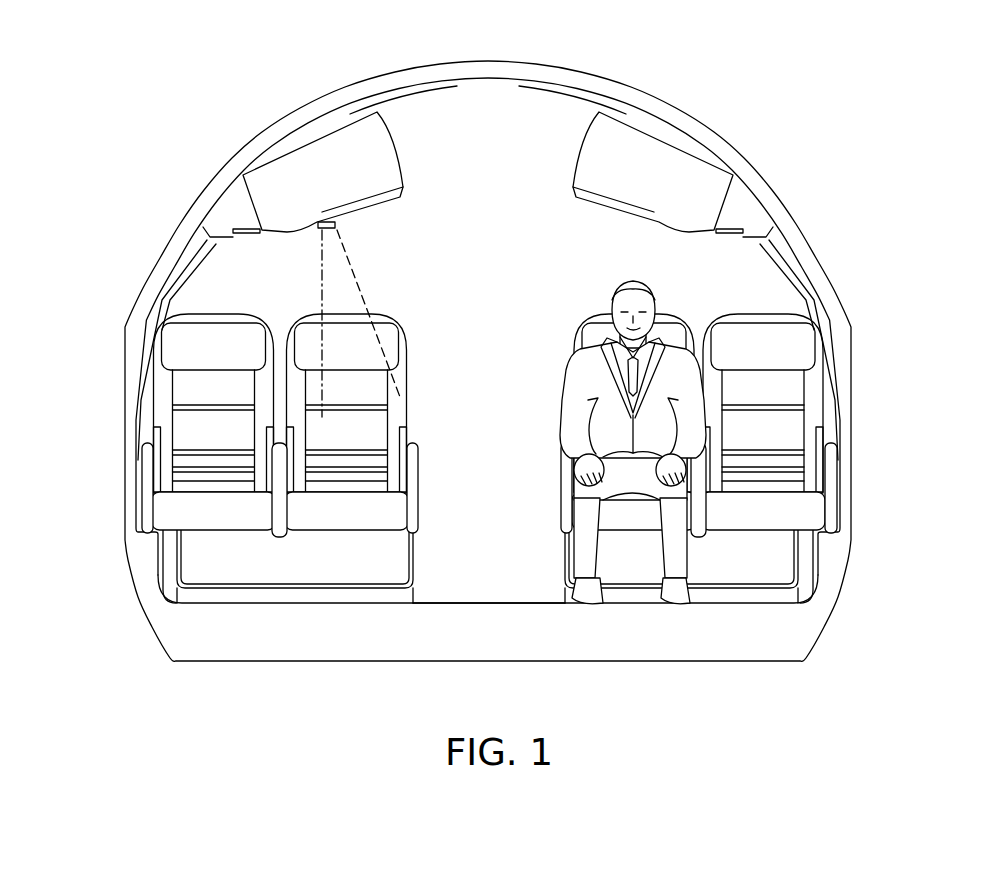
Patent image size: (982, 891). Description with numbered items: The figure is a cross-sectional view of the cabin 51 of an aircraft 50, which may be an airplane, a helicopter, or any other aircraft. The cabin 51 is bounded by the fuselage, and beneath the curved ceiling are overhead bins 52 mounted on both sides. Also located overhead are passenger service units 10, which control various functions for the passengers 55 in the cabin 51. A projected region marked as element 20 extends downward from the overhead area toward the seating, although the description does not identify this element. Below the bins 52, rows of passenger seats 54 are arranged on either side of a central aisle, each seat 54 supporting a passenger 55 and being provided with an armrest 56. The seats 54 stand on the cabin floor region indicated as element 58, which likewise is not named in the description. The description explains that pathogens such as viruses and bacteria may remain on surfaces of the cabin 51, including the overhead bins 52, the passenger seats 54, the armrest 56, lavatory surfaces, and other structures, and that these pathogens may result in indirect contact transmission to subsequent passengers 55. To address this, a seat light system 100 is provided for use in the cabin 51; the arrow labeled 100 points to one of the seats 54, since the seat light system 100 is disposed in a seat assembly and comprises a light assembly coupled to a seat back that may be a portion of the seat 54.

The aircraft 50 is at (141, 73).
The passenger service unit 10 is at (327, 213).
The projection beam 20 is at (330, 213).
The overhead bin 52 is at (277, 197).
The passenger seat 54 is at (372, 393).
The passenger 55 is at (715, 289).
The armrest 56 is at (420, 457).
The cabin floor 58 is at (500, 597).
The cabin 51 is at (512, 508).
The seat light system 100 is at (489, 442).